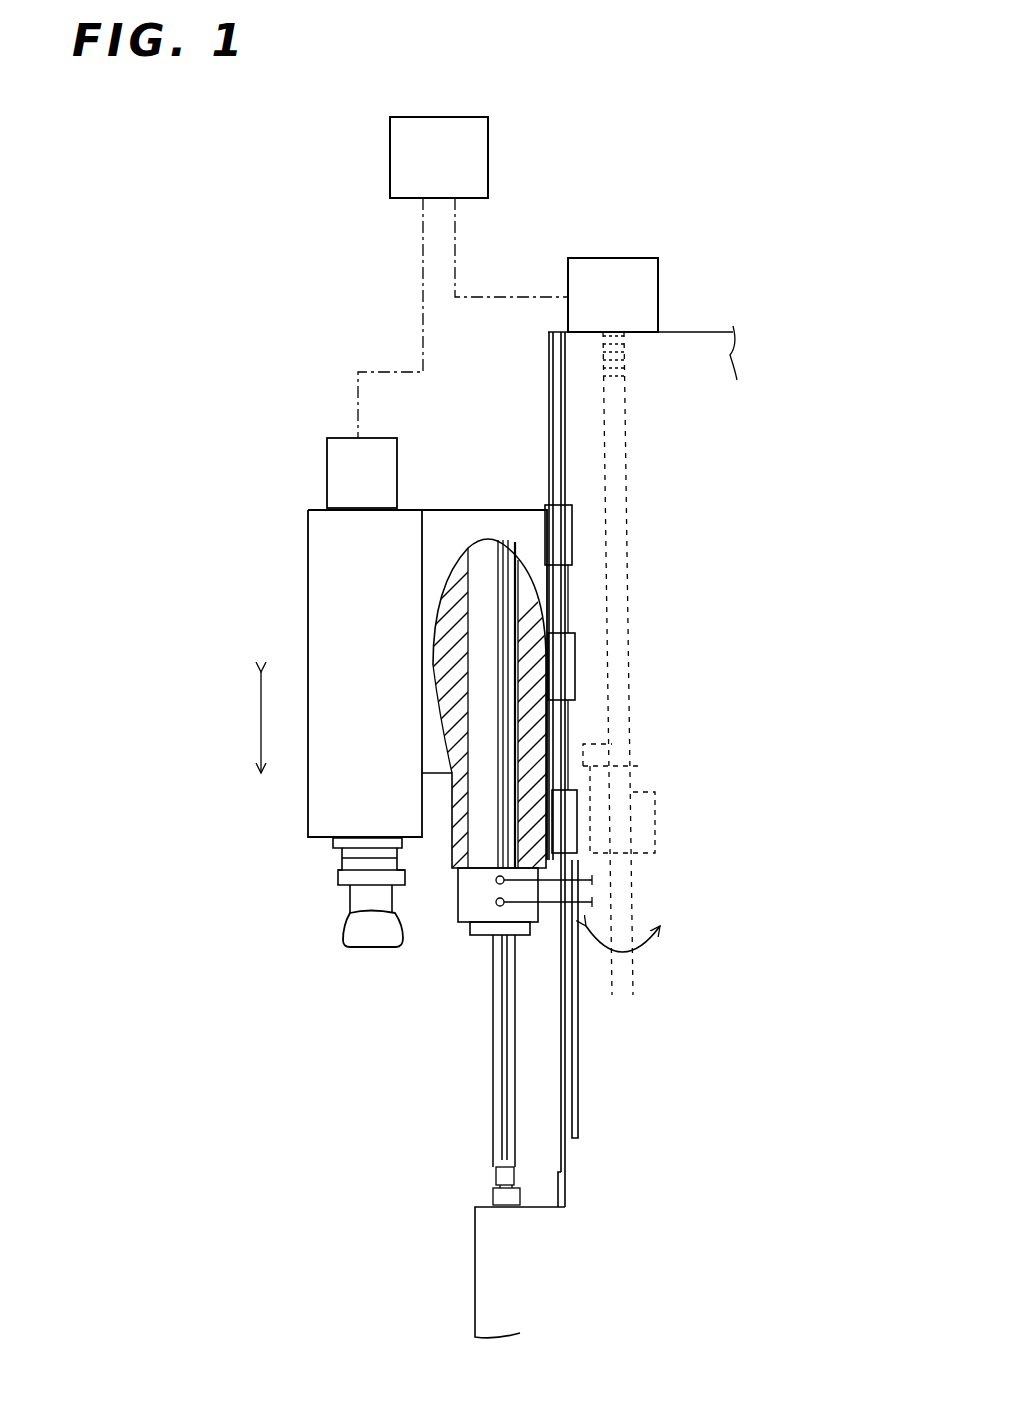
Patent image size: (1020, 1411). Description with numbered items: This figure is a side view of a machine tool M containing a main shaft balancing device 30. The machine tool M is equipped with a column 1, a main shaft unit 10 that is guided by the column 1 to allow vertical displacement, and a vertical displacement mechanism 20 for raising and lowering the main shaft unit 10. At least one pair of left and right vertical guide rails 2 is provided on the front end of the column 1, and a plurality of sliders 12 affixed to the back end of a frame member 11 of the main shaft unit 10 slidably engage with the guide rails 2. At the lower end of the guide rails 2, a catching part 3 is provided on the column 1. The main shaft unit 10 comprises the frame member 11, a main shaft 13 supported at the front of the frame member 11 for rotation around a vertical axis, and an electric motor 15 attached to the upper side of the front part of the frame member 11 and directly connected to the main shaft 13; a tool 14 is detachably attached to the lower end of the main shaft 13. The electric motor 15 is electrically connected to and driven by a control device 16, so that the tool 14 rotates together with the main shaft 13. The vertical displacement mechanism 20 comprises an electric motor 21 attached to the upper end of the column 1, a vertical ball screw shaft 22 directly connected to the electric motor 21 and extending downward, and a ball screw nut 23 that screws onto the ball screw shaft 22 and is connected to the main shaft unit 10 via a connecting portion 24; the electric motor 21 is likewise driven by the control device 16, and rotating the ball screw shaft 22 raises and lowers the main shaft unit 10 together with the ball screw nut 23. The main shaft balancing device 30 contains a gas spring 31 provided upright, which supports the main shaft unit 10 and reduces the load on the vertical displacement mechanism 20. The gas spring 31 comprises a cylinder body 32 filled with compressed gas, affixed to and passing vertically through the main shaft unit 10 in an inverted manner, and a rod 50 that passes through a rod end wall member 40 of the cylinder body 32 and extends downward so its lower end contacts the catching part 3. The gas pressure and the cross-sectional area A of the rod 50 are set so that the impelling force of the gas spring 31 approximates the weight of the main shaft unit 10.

The column 1 is at (708, 342).
The vertical guide rails 2 is at (549, 366).
The catching part 3 is at (492, 1270).
The main shaft unit 10 is at (376, 713).
The frame member 11 is at (308, 616).
The sliders 12 is at (573, 528).
The main shaft 13 is at (332, 848).
The tool 14 is at (363, 952).
The electric motor 15 is at (327, 462).
The control device 16 is at (438, 117).
The vertical displacement mechanism 20 is at (685, 221).
The electric motor 21 is at (616, 258).
The vertical ball screw shaft 22 is at (626, 467).
The ball screw nut 23 is at (655, 796).
The connecting portion 24 is at (612, 744).
The main shaft balancing device 30 is at (456, 1036).
The gas spring 31 is at (456, 746).
The cylinder body 32 is at (440, 650).
The rod end wall member 40 is at (517, 922).
The rod 50 is at (495, 1100).
The machine tool M is at (232, 427).
The cross-sectional area of rod A is at (268, 1113).